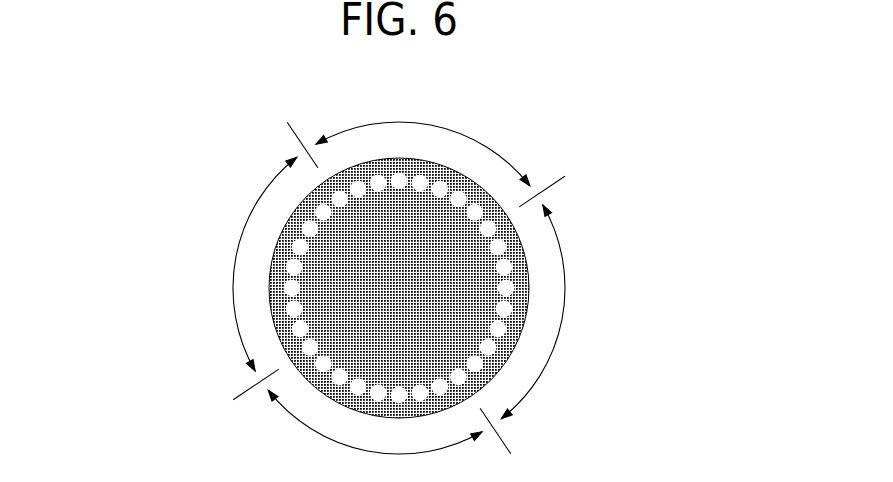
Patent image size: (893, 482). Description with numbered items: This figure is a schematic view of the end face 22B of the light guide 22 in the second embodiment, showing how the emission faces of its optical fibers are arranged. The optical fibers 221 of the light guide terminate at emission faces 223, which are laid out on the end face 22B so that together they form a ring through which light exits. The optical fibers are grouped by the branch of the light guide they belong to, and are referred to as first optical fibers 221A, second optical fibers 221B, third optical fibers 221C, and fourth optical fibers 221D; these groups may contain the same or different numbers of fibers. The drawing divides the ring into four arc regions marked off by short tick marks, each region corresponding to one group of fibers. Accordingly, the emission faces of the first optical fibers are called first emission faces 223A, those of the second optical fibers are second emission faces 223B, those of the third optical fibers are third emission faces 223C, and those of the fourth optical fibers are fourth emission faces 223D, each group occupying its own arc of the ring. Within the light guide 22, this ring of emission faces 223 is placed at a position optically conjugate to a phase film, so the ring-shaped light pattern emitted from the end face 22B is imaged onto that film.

The light guide 22 is at (362, 162).
The end face 22B is at (483, 369).
The optical fibers 221 is at (440, 263).
The first optical fibers 221A is at (437, 88).
The second optical fibers 221B is at (560, 241).
The third optical fibers 221C is at (433, 454).
The fourth optical fibers 221D is at (270, 182).
The emission faces 223 is at (400, 230).
The first emission faces 223A is at (460, 194).
The second emission faces 223B is at (504, 309).
The third emission faces 223C is at (323, 366).
The fourth emission faces 223D is at (293, 288).